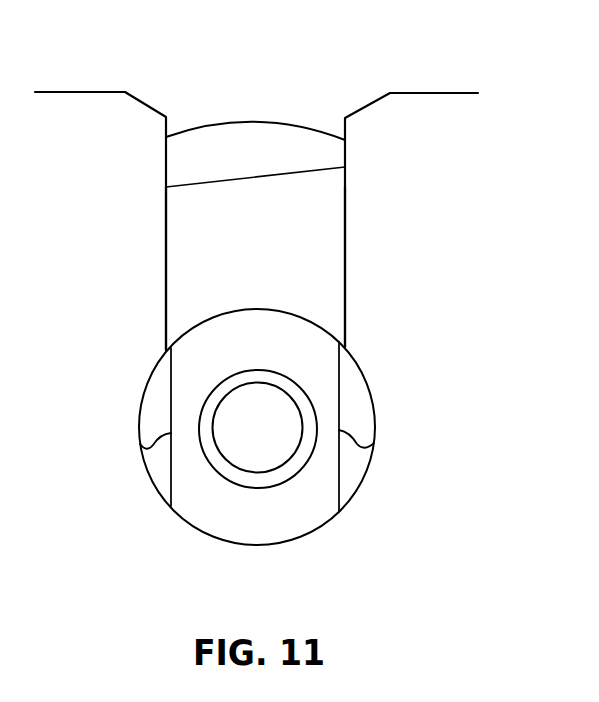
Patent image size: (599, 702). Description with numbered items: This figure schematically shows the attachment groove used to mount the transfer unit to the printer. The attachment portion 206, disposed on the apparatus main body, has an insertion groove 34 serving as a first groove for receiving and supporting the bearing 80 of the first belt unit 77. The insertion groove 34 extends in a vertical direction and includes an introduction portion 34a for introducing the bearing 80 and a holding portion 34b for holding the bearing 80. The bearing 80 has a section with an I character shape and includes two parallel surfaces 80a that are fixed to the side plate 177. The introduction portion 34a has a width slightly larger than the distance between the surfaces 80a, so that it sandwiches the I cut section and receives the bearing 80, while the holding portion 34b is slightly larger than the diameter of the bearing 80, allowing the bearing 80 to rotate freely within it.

The attachment portion 206 is at (110, 111).
The first belt unit 77 is at (252, 178).
The insertion groove 34 is at (81, 262).
The introduction portion 34a is at (182, 233).
The holding portion 34b is at (152, 400).
The side plate 177 is at (330, 290).
The bearing 80 is at (270, 556).
The parallel surfaces 80a is at (140, 446).